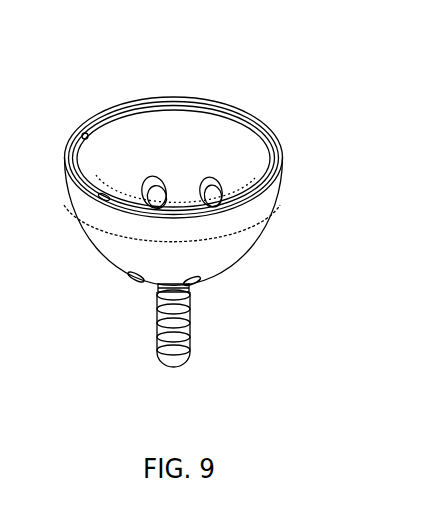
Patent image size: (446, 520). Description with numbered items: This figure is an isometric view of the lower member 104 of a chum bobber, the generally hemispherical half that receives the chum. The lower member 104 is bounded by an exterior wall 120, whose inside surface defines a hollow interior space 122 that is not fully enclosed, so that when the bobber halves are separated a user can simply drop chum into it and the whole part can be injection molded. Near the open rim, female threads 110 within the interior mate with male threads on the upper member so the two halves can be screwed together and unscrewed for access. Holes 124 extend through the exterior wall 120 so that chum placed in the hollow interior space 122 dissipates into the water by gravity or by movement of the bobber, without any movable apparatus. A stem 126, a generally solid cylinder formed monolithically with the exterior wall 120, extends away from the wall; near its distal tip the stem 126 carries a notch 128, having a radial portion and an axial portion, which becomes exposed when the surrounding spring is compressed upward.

The lower member 104 is at (303, 50).
The female threads 110 is at (88, 128).
The exterior wall 120 is at (243, 243).
The hollow interior space 122 is at (193, 160).
The holes 124 is at (151, 188).
The stem 126 is at (160, 356).
The notch 128 is at (192, 325).